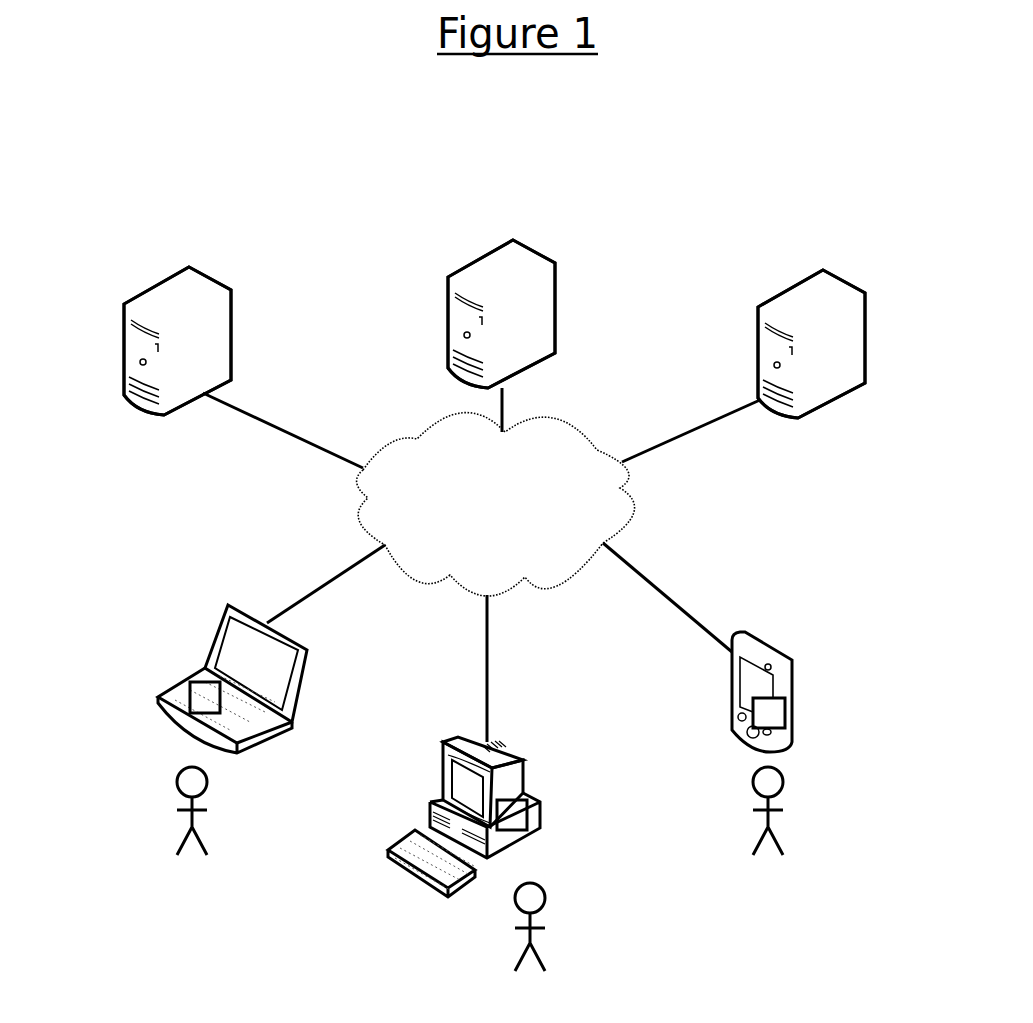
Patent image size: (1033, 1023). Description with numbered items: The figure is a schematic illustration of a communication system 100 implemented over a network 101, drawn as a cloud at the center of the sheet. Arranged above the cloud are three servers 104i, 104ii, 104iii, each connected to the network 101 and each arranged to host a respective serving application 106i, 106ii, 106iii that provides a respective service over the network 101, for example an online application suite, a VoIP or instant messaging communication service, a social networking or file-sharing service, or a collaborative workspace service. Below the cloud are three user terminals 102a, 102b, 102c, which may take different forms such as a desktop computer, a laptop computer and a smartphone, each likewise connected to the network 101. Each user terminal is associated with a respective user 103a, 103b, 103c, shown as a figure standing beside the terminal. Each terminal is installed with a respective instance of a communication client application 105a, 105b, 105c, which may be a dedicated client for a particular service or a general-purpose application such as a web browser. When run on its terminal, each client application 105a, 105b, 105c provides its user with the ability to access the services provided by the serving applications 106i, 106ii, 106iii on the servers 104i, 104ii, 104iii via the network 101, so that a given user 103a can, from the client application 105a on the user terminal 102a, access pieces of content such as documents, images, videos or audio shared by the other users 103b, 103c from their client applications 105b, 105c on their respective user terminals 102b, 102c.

The communication system 100 is at (356, 166).
The network 101 is at (358, 518).
The user terminal 102a is at (498, 740).
The user terminal 102b is at (307, 650).
The user terminal 102c is at (732, 695).
The user 103a is at (545, 898).
The user 103b is at (177, 782).
The user 103c is at (783, 780).
The server 104i is at (122, 342).
The server 104ii is at (447, 318).
The server 104iii is at (758, 343).
The client application 105a is at (527, 805).
The client application 105b is at (190, 690).
The client application 105c is at (785, 708).
The serving application 106i is at (230, 335).
The serving application 106ii is at (555, 310).
The serving application 106iii is at (865, 338).